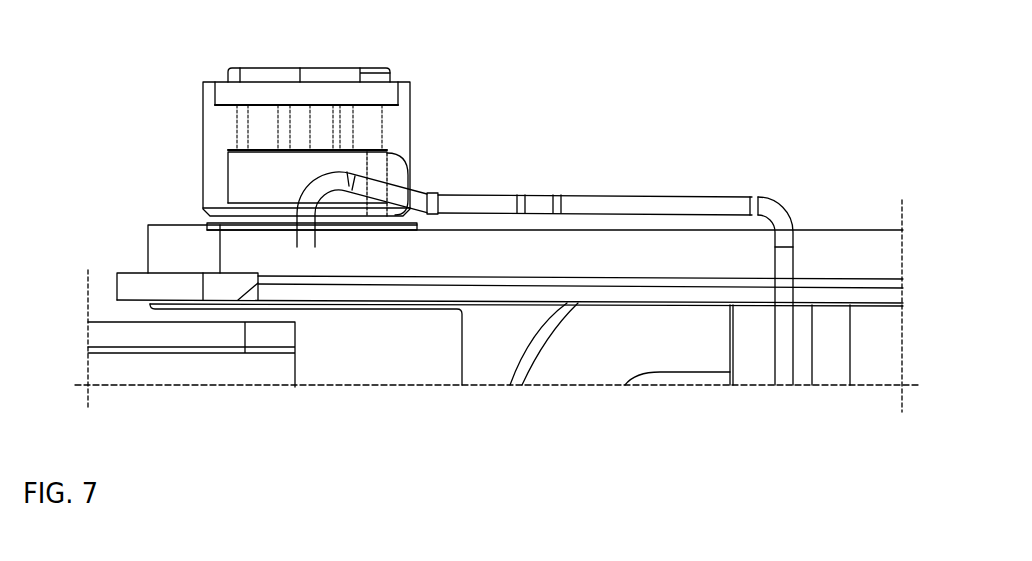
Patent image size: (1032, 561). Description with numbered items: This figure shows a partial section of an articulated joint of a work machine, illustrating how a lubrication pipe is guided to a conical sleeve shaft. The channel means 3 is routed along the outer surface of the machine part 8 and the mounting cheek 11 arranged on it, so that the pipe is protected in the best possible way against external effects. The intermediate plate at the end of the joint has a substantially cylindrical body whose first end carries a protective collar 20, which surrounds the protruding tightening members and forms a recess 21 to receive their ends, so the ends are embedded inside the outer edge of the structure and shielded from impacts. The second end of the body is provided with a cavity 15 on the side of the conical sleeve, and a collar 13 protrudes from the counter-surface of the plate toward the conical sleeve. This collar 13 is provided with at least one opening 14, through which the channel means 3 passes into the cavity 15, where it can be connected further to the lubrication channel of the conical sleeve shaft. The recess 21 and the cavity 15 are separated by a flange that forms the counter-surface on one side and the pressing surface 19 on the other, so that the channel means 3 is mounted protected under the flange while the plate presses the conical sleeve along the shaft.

The channel means 3 is at (697, 196).
The machine part 8 is at (607, 362).
The mounting cheek 11 is at (822, 253).
The collar 13 is at (213, 185).
The opening 14 is at (383, 172).
The cavity 15 is at (240, 168).
The pressing surface 19 is at (208, 214).
The protective collar 20 is at (390, 106).
The recess 21 is at (255, 123).